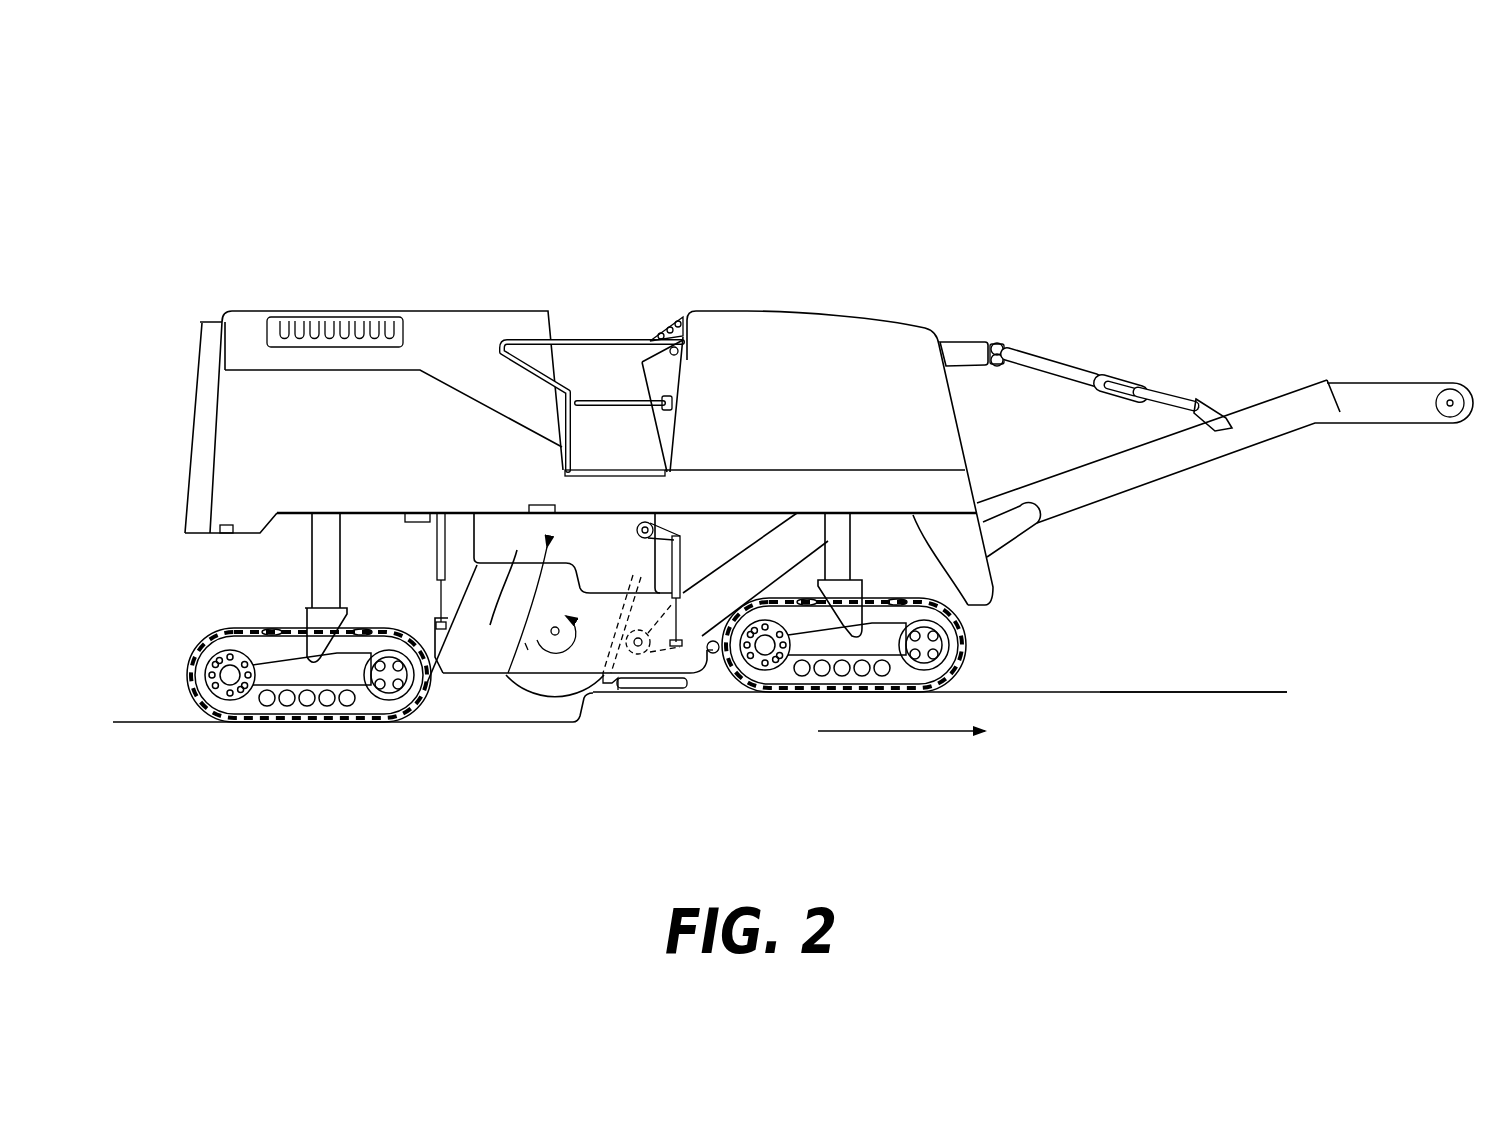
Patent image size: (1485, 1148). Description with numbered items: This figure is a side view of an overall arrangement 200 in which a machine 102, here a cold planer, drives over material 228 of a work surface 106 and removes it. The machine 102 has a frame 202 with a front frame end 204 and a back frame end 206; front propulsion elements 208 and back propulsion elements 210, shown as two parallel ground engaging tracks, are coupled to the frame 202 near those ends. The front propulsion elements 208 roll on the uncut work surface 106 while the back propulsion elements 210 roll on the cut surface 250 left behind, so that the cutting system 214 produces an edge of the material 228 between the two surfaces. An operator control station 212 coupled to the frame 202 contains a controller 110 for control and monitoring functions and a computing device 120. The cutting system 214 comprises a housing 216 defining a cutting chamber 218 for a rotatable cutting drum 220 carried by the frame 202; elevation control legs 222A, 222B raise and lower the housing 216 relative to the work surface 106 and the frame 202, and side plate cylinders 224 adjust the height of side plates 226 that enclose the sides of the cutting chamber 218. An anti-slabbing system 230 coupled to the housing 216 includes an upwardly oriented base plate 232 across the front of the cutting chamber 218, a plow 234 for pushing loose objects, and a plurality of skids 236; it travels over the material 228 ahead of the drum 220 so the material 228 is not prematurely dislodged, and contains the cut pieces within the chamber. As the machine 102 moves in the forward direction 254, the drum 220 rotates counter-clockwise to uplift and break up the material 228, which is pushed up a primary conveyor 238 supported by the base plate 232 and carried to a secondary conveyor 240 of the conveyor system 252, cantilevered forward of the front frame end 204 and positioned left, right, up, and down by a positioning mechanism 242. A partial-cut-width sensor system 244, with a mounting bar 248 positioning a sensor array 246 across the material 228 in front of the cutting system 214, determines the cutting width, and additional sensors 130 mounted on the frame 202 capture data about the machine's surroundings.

The milling system 200 is at (202, 110).
The machine 102 is at (200, 290).
The work surface 106 is at (1083, 692).
The controller 110 is at (665, 362).
The computing device 120 is at (684, 350).
The sensors 130 is at (228, 535).
The frame 202 is at (250, 512).
The front frame end 204 is at (978, 452).
The back frame end 206 is at (185, 468).
The front propulsion elements 208 is at (968, 648).
The back propulsion elements 210 is at (190, 675).
The operator control station 212 is at (608, 332).
The cutting system 214 is at (514, 754).
The housing 216 is at (424, 690).
The cutting chamber 218 is at (490, 625).
The rotatable cutting drum 220 is at (550, 648).
The elevation control leg 222A is at (836, 540).
The elevation control leg 222B is at (325, 532).
The side plate cylinders 224 is at (437, 546).
The side plates 226 is at (525, 643).
The material 228 is at (1190, 705).
The anti-slabbing system 230 is at (661, 708).
The base plate 232 is at (630, 575).
The plow 234 is at (690, 688).
The skids 236 is at (618, 688).
The primary conveyor 238 is at (766, 569).
The secondary conveyor 240 is at (1200, 467).
The positioning mechanism 242 is at (1212, 352).
The partial-cut-width sensor system 244 is at (711, 692).
The sensor array 246 is at (739, 690).
The mounting bar 248 is at (720, 612).
The cut surface 250 is at (165, 722).
The conveyor system 252 is at (1097, 515).
The forward direction 254 is at (910, 732).